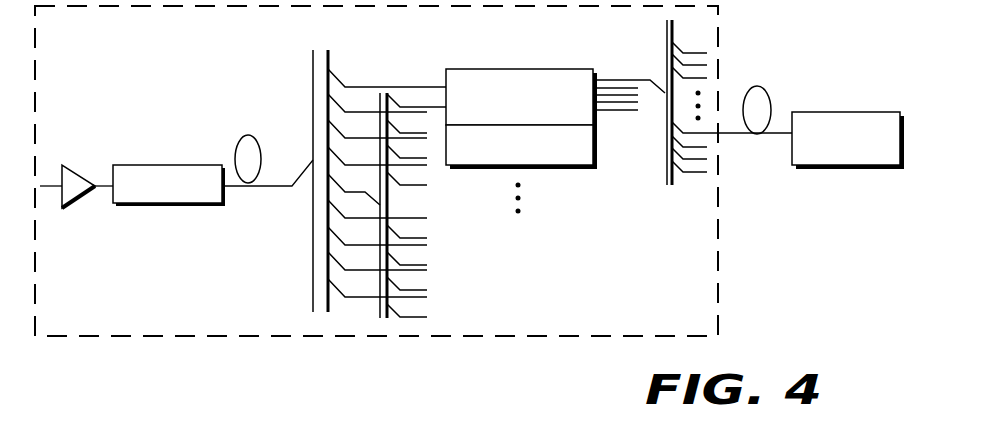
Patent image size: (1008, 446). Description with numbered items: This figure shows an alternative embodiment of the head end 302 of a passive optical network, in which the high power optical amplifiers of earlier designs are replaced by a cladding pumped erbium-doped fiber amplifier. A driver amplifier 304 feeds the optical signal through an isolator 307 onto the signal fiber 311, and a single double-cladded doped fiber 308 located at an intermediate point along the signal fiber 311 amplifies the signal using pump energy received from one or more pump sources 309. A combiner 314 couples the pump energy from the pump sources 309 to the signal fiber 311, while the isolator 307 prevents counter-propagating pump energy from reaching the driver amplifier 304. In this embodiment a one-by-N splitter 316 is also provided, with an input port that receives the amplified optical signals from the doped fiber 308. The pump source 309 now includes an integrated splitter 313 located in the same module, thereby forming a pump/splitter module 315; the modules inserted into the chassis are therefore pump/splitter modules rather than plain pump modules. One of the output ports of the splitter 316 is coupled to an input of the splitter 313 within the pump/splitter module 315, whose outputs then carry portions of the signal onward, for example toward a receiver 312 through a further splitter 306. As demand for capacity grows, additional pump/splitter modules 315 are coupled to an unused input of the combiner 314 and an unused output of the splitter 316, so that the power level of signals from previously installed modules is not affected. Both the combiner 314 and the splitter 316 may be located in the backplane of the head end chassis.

The head end 302 is at (720, 237).
The driver amplifier 304 is at (87, 200).
The output splitter/combiner 306 is at (667, 155).
The isolator 307 is at (196, 207).
The double-cladded doped fiber 308 is at (245, 134).
The pump source 309 is at (549, 165).
The signal fiber 311 is at (272, 188).
The receiver 312 is at (858, 112).
The integrated splitter 313 is at (617, 115).
The combiner 314 is at (313, 97).
The pump/splitter module 315 is at (512, 68).
The 1×N splitter 316 is at (390, 202).